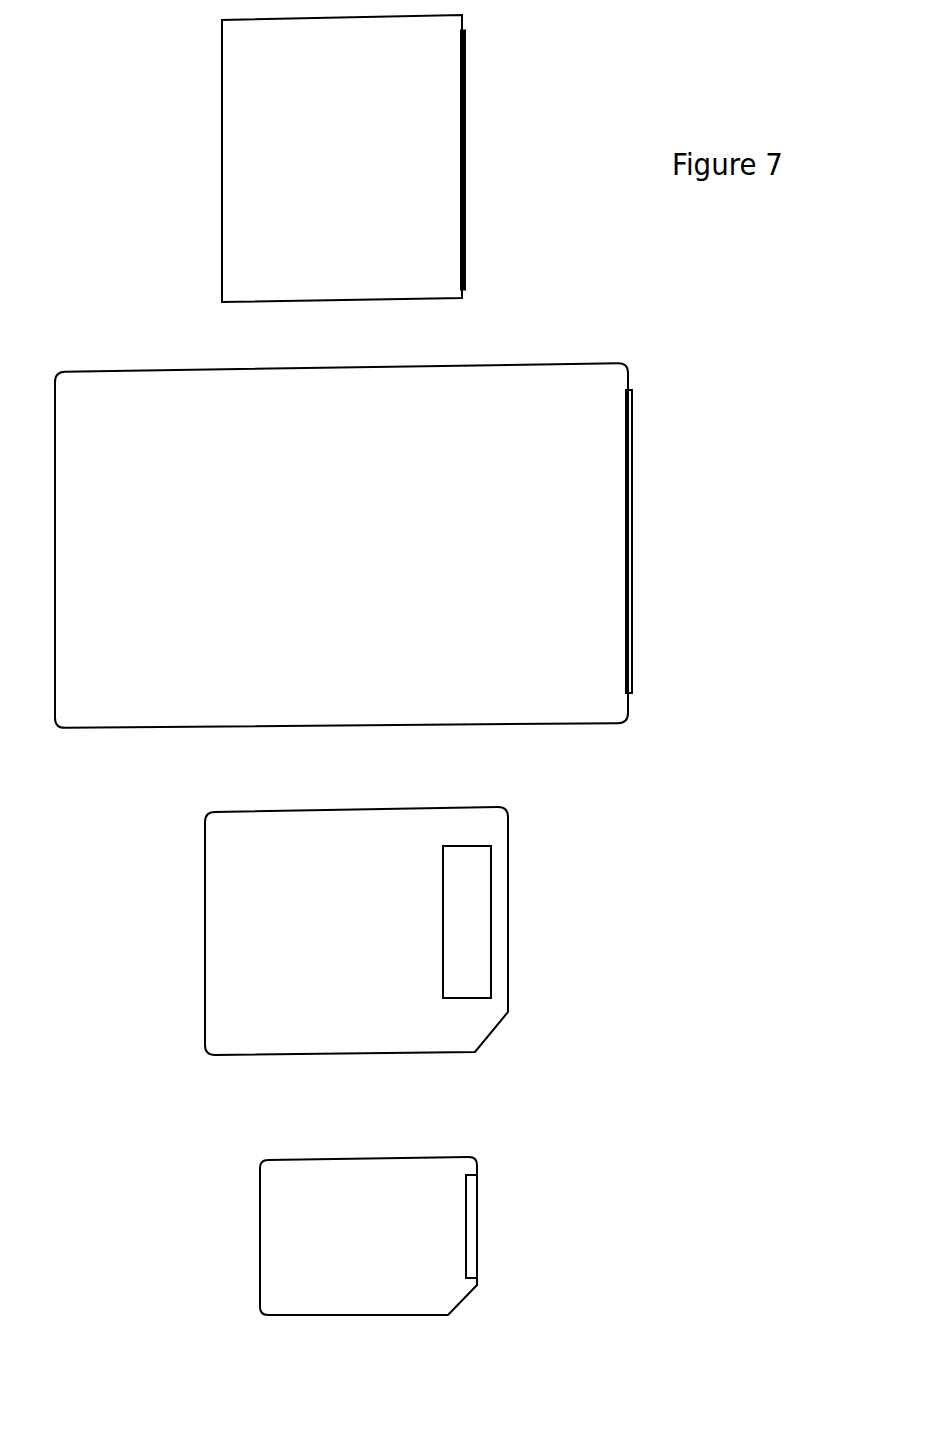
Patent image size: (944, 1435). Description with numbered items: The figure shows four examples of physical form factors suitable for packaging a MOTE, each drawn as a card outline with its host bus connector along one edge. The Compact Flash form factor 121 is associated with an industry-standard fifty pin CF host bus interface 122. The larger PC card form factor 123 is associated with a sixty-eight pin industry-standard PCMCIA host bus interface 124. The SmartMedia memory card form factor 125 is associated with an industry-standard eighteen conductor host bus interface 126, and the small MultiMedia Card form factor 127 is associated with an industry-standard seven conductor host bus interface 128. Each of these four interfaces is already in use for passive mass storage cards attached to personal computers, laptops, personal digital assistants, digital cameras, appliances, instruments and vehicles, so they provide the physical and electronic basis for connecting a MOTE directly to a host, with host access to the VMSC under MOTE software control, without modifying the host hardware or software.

The Compact Flash form factor 121 is at (222, 122).
The 50 pin host bus interface 122 is at (466, 192).
The PC card form factor 123 is at (52, 527).
The 68 pin PCMCIA host bus interface 124 is at (632, 598).
The SmartMedia memory card form factor 125 is at (205, 931).
The 18 conductor host bus interface 126 is at (491, 962).
The MultiMedia Card form factor 127 is at (260, 1238).
The seven conductor host bus interface 128 is at (478, 1252).